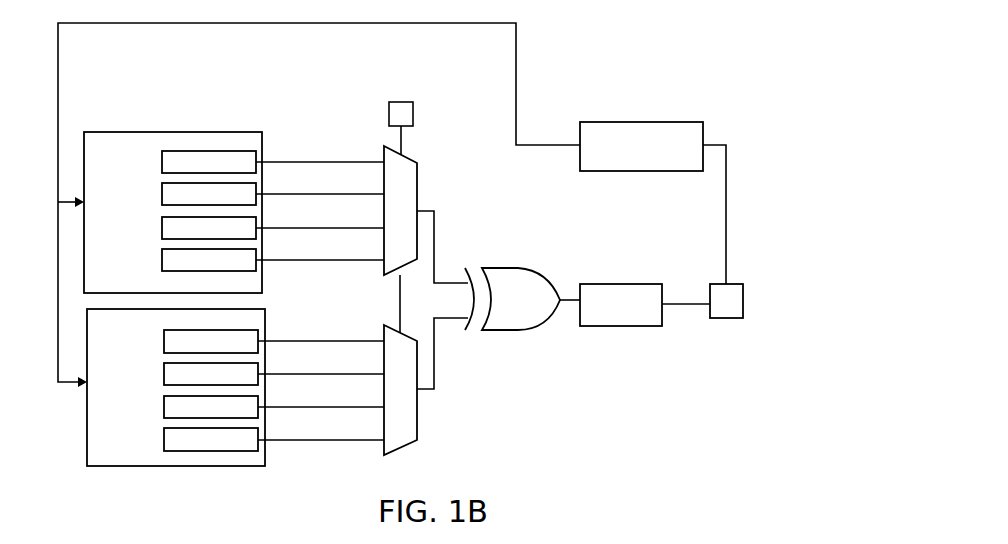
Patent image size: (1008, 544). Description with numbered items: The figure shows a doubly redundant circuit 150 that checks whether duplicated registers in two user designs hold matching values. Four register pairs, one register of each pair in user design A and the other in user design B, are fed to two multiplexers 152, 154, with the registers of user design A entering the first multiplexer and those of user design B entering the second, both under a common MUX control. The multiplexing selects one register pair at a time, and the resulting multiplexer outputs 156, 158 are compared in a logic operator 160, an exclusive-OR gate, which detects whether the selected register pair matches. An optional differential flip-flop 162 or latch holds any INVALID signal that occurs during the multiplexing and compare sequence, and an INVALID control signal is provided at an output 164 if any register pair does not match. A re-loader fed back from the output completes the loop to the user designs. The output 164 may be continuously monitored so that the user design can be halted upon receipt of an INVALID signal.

The doubly redundant circuit 150 is at (804, 88).
The multiplexer 152 is at (405, 155).
The multiplexer 154 is at (418, 428).
The multiplexer output 156 is at (435, 224).
The multiplexer output 158 is at (435, 355).
The logic operator (exclusive-OR) 160 is at (528, 270).
The differential flip-flop 162 is at (597, 283).
The output 164 is at (726, 318).